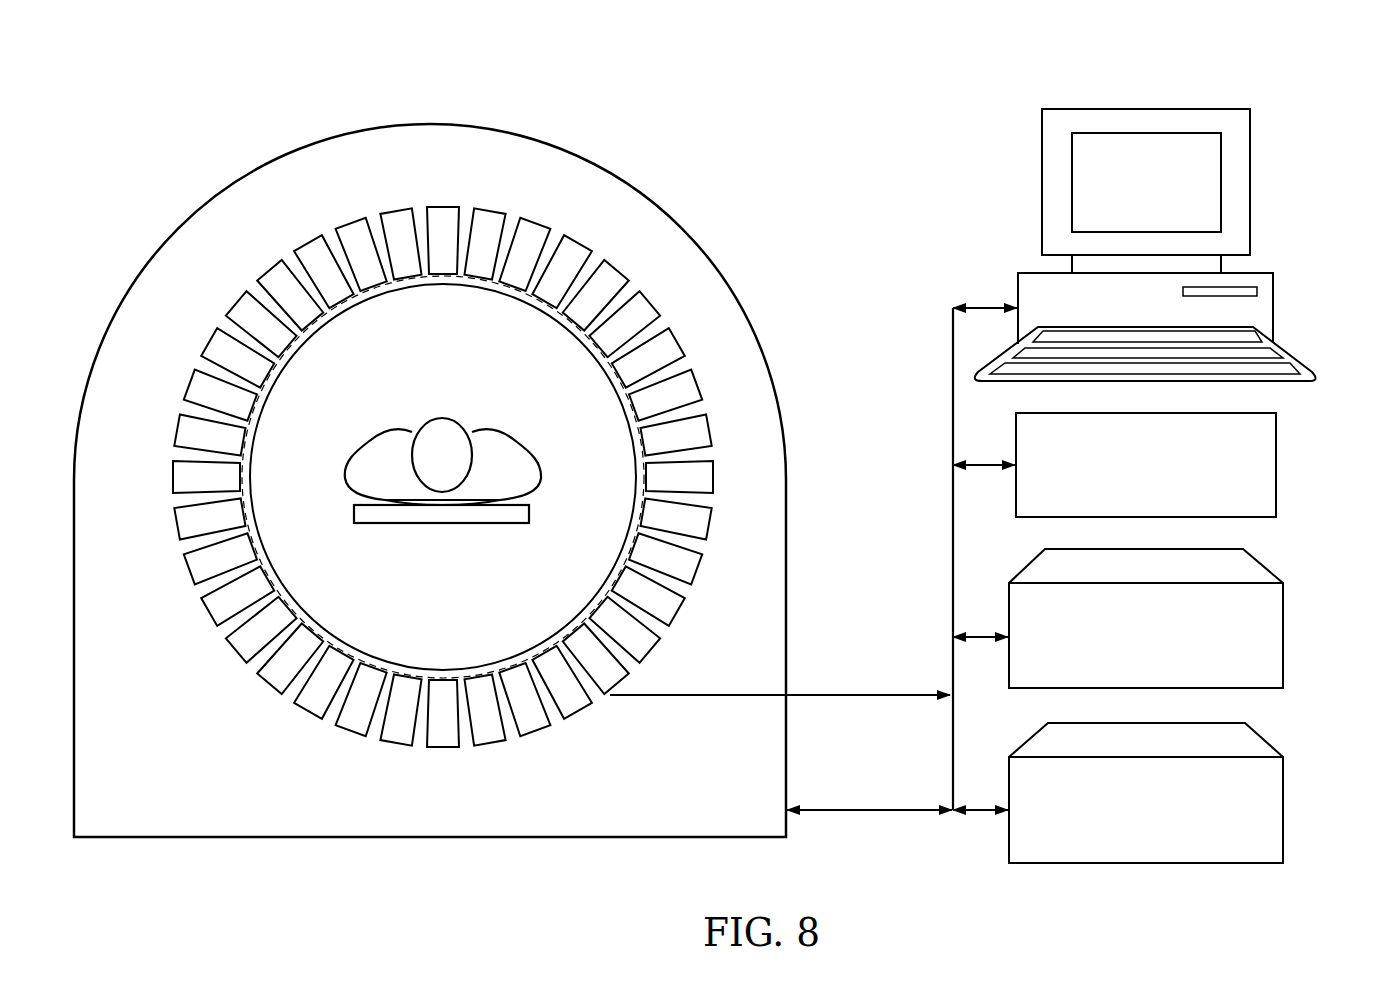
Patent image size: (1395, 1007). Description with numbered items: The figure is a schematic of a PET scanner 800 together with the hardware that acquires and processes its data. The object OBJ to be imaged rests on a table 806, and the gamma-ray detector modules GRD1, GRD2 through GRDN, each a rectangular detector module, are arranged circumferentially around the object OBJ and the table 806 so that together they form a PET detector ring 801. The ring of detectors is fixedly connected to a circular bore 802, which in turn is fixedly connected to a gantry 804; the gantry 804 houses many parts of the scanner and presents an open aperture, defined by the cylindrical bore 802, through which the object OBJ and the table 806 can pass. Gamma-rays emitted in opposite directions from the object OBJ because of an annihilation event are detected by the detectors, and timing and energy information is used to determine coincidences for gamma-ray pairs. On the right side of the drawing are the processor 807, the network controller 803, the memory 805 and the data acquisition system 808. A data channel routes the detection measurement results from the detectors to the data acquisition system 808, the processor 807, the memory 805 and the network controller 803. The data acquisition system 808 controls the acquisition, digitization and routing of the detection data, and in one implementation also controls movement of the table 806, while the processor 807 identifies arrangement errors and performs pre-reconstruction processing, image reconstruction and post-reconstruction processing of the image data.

The PET scanner 800 is at (847, 50).
The detector ring 801 is at (417, 410).
The circular bore 802 is at (240, 580).
The network controller 803 is at (1278, 464).
The gantry 804 is at (705, 248).
The memory 805 is at (1284, 632).
The table 806 is at (410, 523).
The processor 807 is at (1218, 182).
The data acquisition system 808 is at (1284, 810).
The gamma-ray detector GRD1 is at (448, 207).
The gamma-ray detector GRD2 is at (492, 208).
The gamma-ray detector GRDN is at (397, 207).
The object OBJ is at (413, 420).